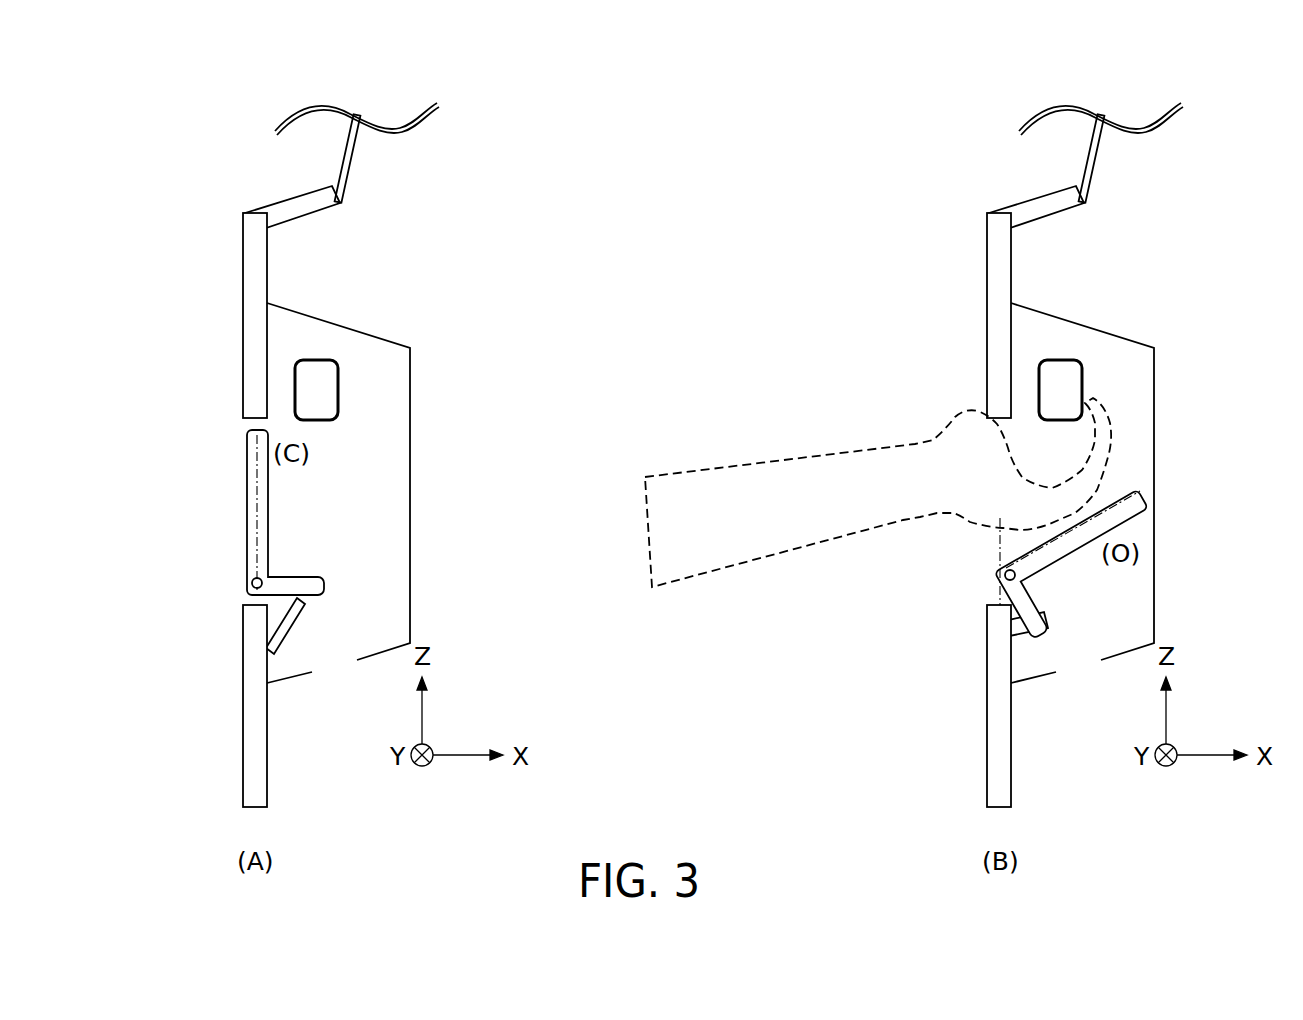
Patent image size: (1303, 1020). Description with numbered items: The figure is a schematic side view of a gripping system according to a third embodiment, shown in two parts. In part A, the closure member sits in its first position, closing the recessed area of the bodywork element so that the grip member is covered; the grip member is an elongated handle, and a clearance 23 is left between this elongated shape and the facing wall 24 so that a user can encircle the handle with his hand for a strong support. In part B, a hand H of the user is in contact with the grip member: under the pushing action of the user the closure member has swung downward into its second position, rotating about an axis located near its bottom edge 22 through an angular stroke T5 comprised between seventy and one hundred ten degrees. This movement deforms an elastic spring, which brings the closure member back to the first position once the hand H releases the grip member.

The bottom edge 22 is at (250, 592).
The clearance 23 is at (283, 382).
The facing wall 24 is at (265, 403).
The angular stroke T5 is at (1022, 549).
The hand H is at (857, 467).